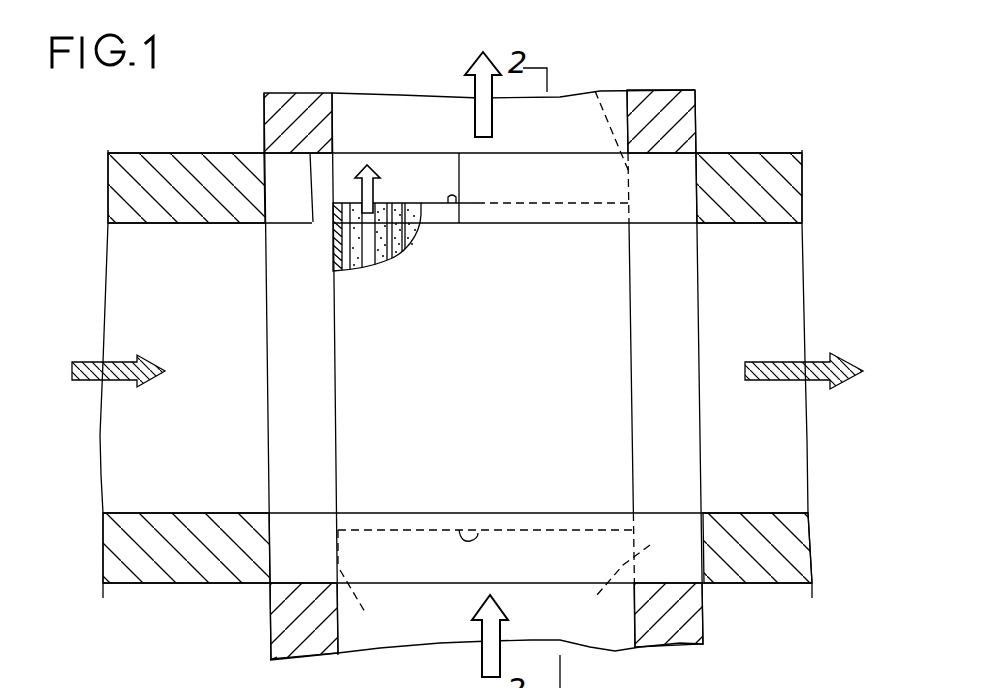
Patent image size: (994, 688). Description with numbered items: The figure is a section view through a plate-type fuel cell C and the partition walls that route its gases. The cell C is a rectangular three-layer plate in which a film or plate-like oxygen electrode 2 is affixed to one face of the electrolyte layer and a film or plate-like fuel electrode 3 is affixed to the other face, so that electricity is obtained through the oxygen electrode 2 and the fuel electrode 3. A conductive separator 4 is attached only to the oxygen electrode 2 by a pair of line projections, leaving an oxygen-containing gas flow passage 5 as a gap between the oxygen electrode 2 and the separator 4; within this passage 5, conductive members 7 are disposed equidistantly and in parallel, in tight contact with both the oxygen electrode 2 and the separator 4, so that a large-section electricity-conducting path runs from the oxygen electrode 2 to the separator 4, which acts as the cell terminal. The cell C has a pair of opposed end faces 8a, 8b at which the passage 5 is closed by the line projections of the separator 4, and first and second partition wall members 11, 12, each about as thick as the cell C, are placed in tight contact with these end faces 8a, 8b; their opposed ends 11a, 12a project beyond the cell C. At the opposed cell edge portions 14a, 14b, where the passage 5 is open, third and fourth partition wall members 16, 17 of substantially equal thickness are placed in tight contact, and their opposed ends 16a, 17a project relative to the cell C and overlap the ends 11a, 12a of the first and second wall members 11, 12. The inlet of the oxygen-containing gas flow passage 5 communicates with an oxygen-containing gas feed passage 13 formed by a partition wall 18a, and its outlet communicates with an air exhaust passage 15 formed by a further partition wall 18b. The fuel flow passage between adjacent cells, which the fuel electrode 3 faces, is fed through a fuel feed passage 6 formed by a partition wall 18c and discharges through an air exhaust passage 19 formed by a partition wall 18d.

The oxygen electrode 2 is at (393, 215).
The fuel electrode 3 is at (78, 425).
The conductive separator 4 is at (353, 317).
The oxygen-containing gas flow passage 5 is at (395, 249).
The fuel feed passage 6 is at (150, 348).
The conductive members 7 is at (350, 241).
The end face 8a is at (338, 263).
The end face 8b is at (628, 272).
The first partition wall member 11 is at (267, 445).
The opposed end 11a is at (322, 170).
The second partition wall member 12 is at (690, 465).
The opposed end 12a is at (610, 342).
The oxygen-containing gas feed passage 13 is at (458, 636).
The cell edge portion 14a is at (459, 530).
The cell edge portion 14b is at (450, 223).
The air exhaust passage 15 is at (512, 98).
The third partition wall member 16 is at (557, 512).
The opposed end 16a is at (273, 553).
The fourth partition wall member 17 is at (570, 223).
The opposed end 17a is at (277, 165).
The partition wall 18a is at (272, 635).
The partition wall 18b is at (264, 110).
The partition wall 18c is at (125, 158).
The partition wall 18d is at (780, 157).
The air exhaust passage 19 is at (792, 344).
The fuel cell C is at (440, 195).